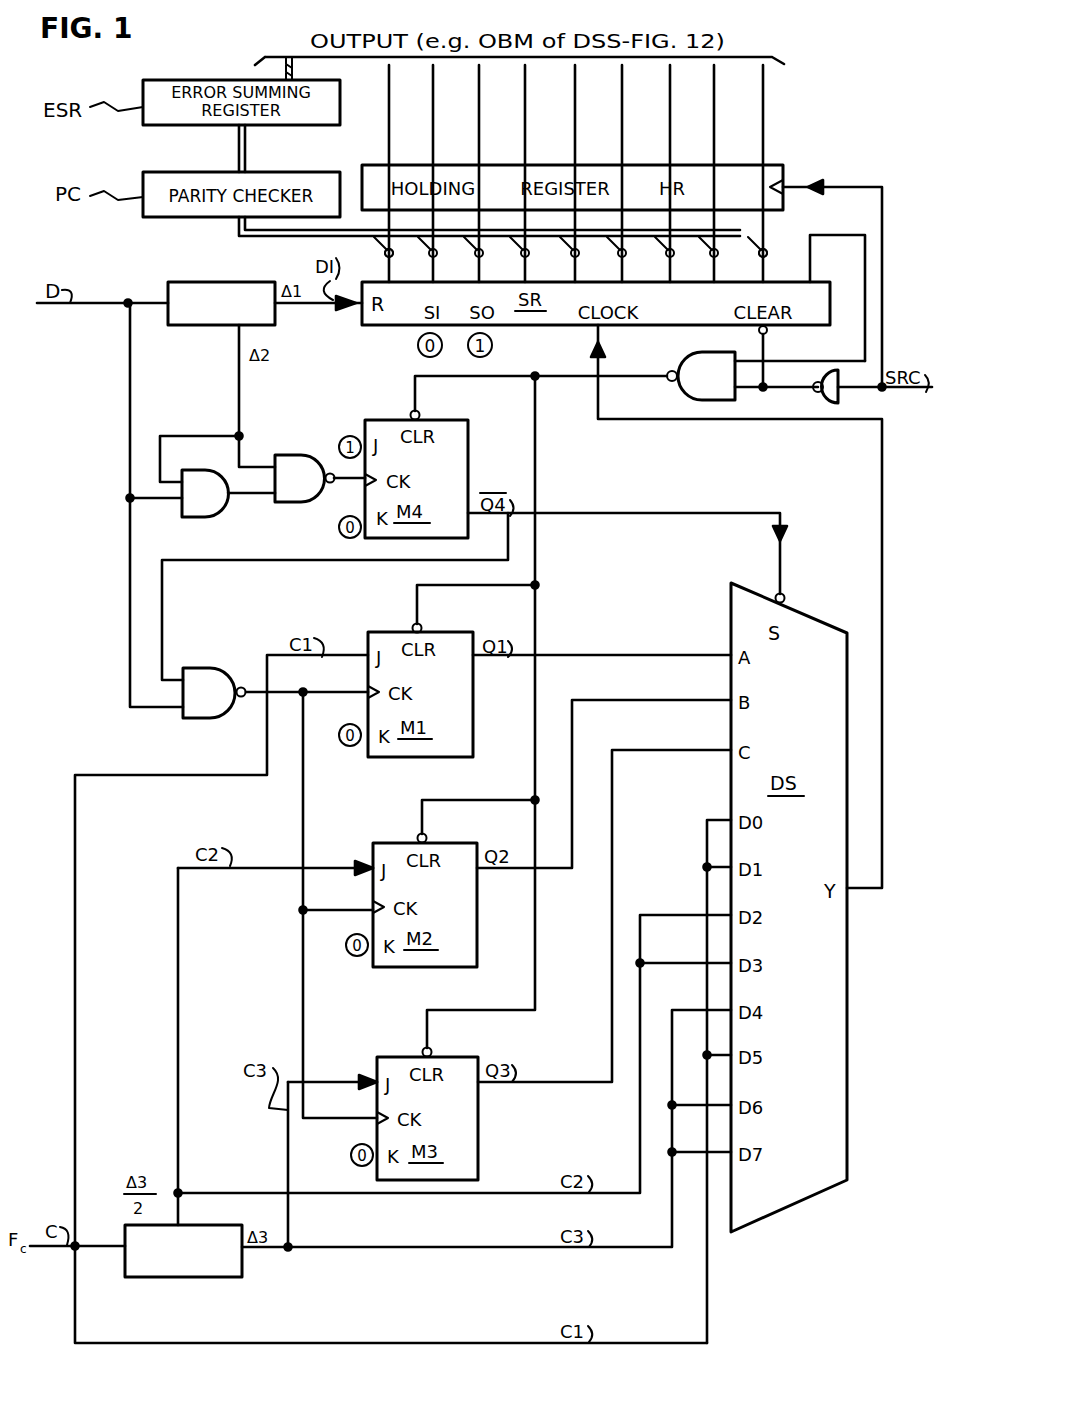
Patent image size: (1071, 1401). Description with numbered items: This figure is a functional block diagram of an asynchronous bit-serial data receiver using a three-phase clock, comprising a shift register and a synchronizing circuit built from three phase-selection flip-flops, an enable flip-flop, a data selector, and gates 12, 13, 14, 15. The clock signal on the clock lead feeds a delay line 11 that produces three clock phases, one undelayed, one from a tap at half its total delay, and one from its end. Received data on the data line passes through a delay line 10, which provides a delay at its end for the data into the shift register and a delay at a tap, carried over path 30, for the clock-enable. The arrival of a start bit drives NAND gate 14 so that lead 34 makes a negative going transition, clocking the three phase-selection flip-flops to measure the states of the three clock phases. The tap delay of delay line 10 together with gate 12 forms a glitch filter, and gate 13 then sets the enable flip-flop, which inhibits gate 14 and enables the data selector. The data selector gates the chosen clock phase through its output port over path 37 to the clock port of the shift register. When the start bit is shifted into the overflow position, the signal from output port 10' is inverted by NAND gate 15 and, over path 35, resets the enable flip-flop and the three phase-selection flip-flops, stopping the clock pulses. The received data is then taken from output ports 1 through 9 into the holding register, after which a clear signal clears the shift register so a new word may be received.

The delay line 10 is at (221, 289).
The delay line 11 is at (233, 1226).
The gate 12 is at (220, 471).
The gate 13 is at (312, 453).
The NAND gate 14 is at (231, 666).
The NAND gate 15 is at (698, 366).
The path 30 is at (239, 390).
The lead 34 is at (330, 690).
The path 35 is at (556, 366).
The path 37 is at (883, 563).
The output port 1 is at (397, 262).
The output port 9 is at (763, 263).
The output port 10' is at (837, 298).